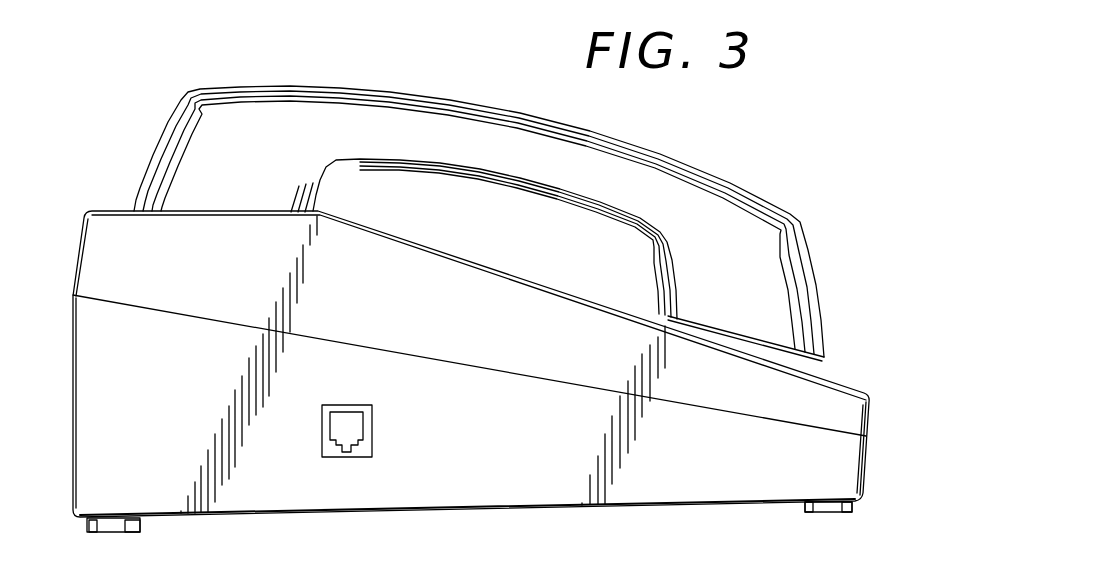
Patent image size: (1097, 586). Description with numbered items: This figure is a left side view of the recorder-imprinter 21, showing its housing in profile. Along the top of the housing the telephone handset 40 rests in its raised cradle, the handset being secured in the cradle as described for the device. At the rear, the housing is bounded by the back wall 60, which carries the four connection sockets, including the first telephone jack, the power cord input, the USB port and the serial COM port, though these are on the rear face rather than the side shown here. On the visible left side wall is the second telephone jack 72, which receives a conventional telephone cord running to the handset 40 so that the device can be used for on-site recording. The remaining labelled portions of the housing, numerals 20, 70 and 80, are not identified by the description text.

The housing 20 is at (61, 326).
The recorder-imprinter 21 is at (829, 274).
The telephone handset 40 is at (174, 141).
The back wall 60 is at (64, 462).
The lower housing portion 70 is at (523, 472).
The second telephone jack 72 is at (331, 455).
The rear wall 80 is at (868, 472).